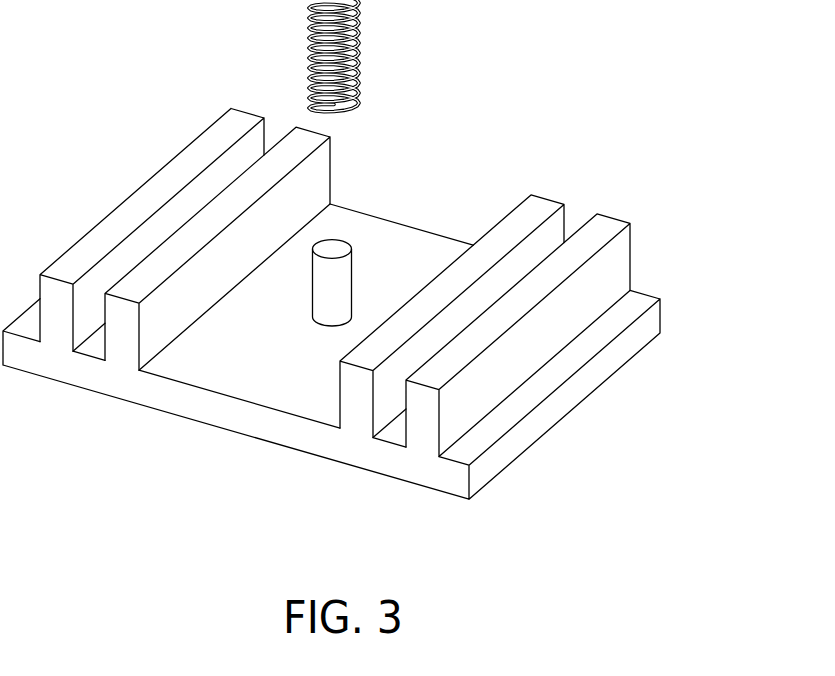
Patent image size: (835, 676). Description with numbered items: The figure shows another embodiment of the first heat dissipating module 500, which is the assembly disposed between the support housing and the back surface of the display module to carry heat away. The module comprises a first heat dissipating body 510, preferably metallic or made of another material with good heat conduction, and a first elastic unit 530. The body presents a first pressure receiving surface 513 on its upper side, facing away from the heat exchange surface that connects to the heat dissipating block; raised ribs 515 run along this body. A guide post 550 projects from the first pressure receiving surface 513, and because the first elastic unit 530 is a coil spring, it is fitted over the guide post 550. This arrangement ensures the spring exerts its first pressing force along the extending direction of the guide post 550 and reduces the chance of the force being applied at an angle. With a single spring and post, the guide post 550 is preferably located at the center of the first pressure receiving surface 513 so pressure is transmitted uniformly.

The first heat dissipating module 500 is at (103, 37).
The first heat dissipating body 510 is at (356, 304).
The first pressure receiving surface 513 is at (427, 234).
The side rib 515 is at (613, 267).
The first elastic unit 530 is at (360, 20).
The guide post 550 is at (333, 247).